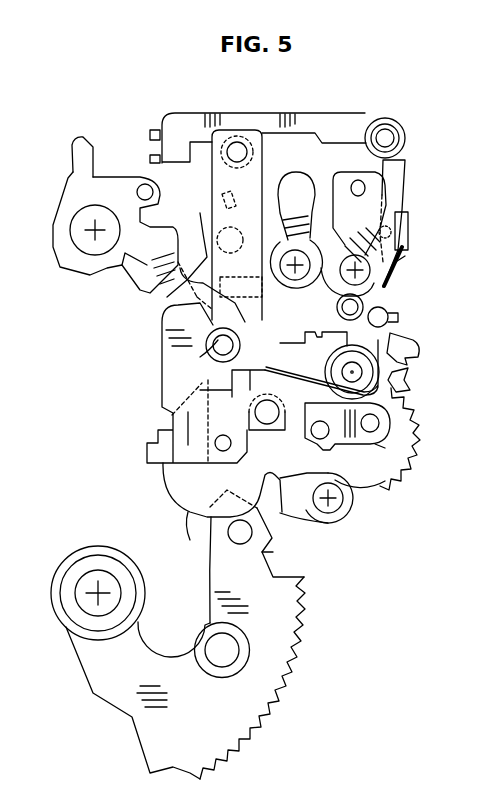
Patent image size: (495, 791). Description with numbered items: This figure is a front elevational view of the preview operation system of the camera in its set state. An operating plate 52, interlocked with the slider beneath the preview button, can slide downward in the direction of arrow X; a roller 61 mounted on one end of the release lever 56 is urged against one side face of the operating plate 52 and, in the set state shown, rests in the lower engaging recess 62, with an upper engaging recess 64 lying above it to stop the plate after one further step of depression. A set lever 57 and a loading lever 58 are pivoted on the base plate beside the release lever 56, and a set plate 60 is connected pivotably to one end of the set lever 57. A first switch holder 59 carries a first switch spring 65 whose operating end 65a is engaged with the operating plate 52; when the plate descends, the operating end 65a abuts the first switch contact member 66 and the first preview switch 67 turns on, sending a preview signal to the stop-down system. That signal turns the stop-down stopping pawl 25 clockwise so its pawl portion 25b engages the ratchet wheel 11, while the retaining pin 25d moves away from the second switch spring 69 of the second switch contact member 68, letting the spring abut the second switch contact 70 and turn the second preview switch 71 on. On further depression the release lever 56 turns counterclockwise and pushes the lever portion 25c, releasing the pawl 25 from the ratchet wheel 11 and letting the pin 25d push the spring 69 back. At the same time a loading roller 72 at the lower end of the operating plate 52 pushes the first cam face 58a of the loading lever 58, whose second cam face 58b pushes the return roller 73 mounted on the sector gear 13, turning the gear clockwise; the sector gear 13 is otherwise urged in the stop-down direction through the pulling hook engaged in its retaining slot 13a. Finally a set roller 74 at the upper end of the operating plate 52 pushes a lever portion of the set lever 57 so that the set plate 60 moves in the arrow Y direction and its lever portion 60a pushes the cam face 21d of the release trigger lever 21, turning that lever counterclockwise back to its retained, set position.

The ratchet wheel 11 is at (420, 418).
The sector gear 13 is at (242, 745).
The retaining slot 13a is at (273, 553).
The release trigger lever 21 is at (68, 262).
The cam face 21d is at (85, 157).
The stop-down stopping pawl 25 is at (414, 346).
The pawl portion 25b is at (393, 375).
The lever portion 25c is at (311, 165).
The retaining pin 25d is at (378, 289).
The operating plate 52 is at (172, 325).
The release lever 56 is at (352, 173).
The set lever 57 is at (400, 177).
The loading lever 58 is at (345, 525).
The first cam face 58a is at (290, 530).
The second cam face 58b is at (228, 565).
The first switch holder 59 is at (400, 385).
The set plate 60 is at (352, 125).
The lever portion 60a is at (151, 129).
The roller 61 is at (229, 350).
The lower engaging recess 62 is at (200, 357).
The upper engaging recess 64 is at (262, 341).
The first switch spring 65 is at (392, 339).
The operating end 65a is at (246, 457).
The first switch contact member 66 is at (410, 450).
The first preview switch 67 is at (388, 455).
The second switch contact member 68 is at (410, 223).
The second switch spring 69 is at (403, 259).
The second switch contact 70 is at (398, 311).
The second preview switch 71 is at (451, 263).
The loading roller 72 is at (227, 485).
The return roller 73 is at (205, 637).
The set roller 74 is at (256, 142).